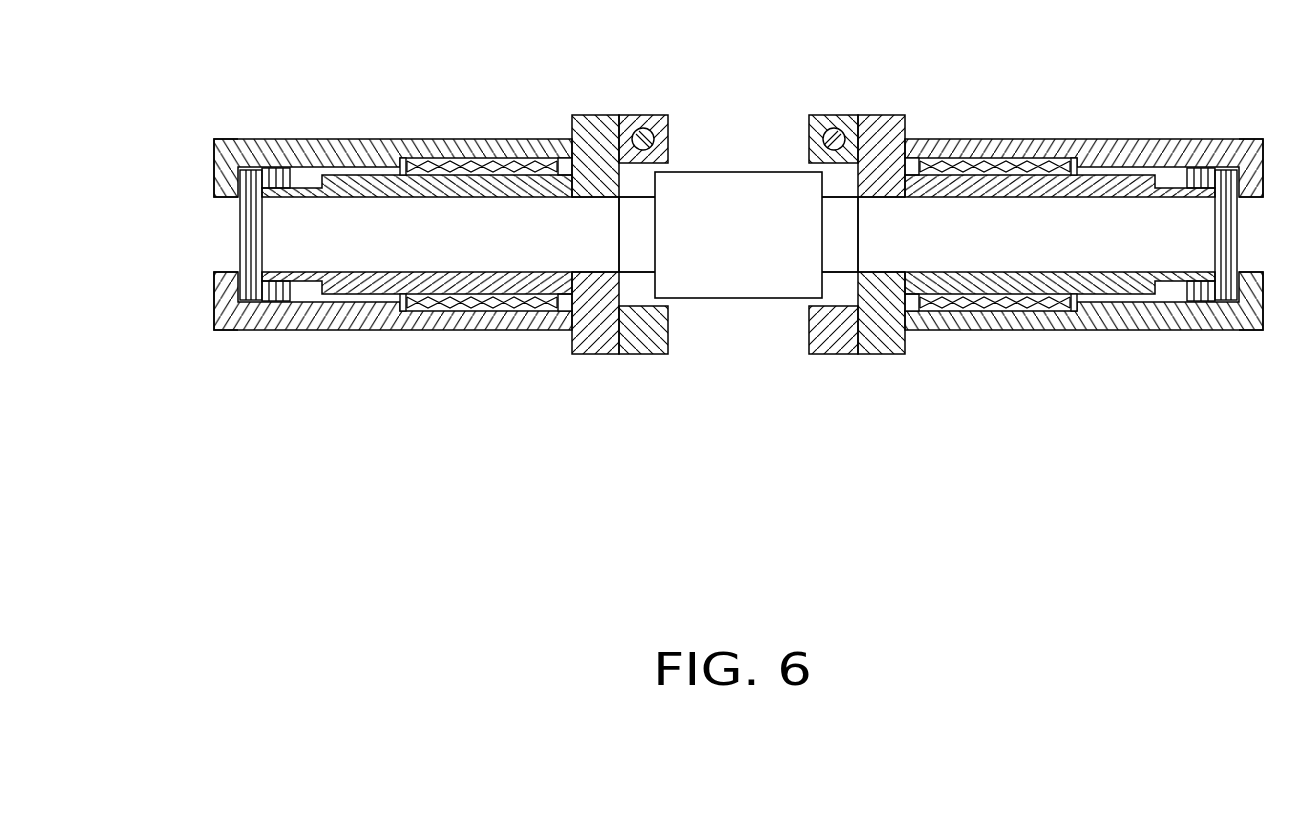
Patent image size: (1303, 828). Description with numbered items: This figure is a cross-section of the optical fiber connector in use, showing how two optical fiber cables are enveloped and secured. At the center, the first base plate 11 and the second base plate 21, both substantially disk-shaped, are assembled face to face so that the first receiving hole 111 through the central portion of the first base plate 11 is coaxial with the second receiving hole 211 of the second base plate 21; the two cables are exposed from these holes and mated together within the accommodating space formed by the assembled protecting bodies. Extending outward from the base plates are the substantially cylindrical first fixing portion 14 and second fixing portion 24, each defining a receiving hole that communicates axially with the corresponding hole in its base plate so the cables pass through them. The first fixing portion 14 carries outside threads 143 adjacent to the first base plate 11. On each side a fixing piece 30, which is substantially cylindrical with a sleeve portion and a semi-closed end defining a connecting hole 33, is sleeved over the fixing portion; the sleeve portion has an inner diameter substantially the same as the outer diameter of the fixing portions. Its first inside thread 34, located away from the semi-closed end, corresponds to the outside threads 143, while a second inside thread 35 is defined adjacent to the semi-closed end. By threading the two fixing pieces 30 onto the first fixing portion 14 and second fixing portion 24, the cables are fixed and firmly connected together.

The first base plate 11 is at (598, 152).
The first receiving hole 111 is at (628, 243).
The first fixing portion 14 is at (350, 283).
The outside threads 143 is at (417, 307).
The second base plate 21 is at (882, 153).
The second receiving hole 211 is at (842, 243).
The second fixing portion 24 is at (1105, 283).
The fixing piece 30 is at (358, 154).
The connecting hole 33 is at (225, 236).
The first inside thread 34 is at (487, 313).
The second inside thread 35 is at (262, 300).